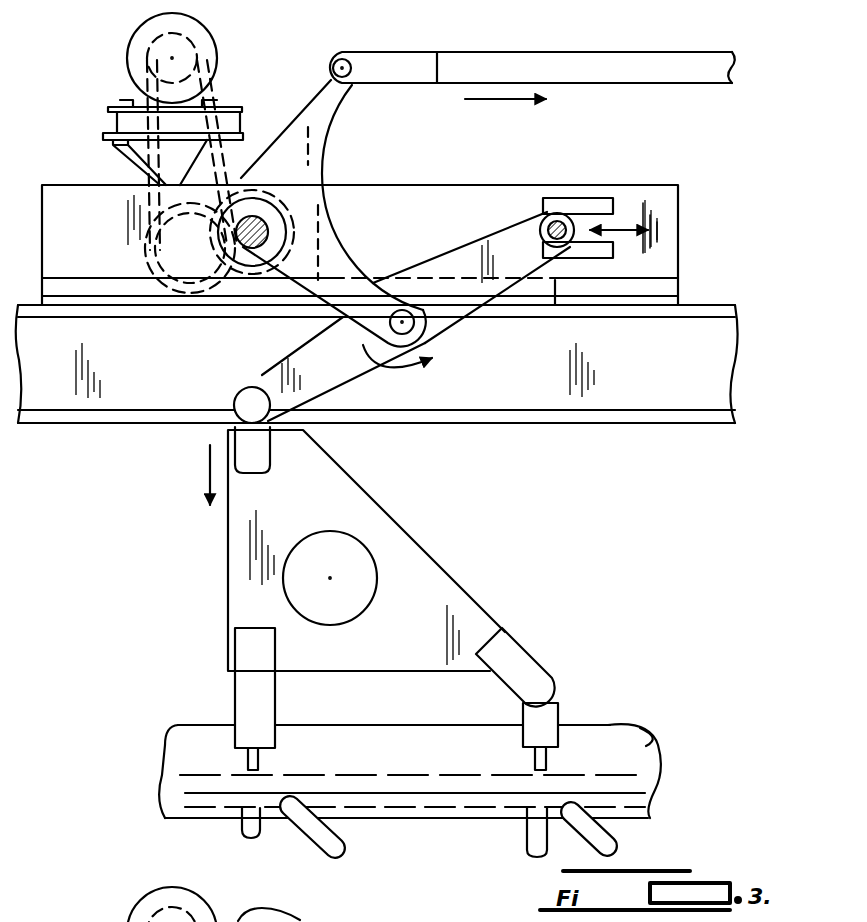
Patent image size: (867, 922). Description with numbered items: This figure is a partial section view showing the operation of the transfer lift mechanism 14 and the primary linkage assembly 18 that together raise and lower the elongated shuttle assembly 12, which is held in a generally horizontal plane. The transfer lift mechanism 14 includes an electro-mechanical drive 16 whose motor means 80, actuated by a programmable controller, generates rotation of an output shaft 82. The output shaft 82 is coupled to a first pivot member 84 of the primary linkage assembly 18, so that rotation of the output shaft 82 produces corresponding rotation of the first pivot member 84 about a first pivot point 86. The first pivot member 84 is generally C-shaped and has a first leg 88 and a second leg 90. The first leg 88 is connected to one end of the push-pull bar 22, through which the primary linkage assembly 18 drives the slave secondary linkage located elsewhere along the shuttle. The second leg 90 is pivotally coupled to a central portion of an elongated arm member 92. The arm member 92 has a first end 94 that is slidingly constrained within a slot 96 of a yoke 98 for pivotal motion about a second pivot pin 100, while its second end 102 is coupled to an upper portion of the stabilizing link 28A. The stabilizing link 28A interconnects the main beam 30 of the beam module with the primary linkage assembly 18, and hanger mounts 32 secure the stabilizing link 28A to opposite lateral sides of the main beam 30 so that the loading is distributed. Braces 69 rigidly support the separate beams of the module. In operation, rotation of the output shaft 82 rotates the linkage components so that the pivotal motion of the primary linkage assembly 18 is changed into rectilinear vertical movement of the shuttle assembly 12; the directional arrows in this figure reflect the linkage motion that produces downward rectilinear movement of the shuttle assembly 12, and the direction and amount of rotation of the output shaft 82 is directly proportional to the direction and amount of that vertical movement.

The shuttle assembly 12 is at (373, 746).
The transfer lift mechanism 14 is at (532, 462).
The electro-mechanical drive 16 is at (166, 467).
The primary linkage assembly 18 is at (490, 168).
The push-pull bar 22 is at (625, 57).
The stabilizing link 28A is at (436, 552).
The main beam 30 is at (608, 732).
The hanger mounts 32 is at (232, 694).
The braces 69 is at (530, 837).
The motor means 80 is at (130, 50).
The output shaft 82 is at (258, 231).
The first pivot member 84 is at (332, 195).
The first pivot point 86 is at (244, 246).
The first leg 88 is at (325, 107).
The second leg 90 is at (370, 287).
The arm member 92 is at (445, 340).
The first end 94 is at (523, 222).
The slot 96 is at (604, 221).
The yoke 98 is at (592, 204).
The second pivot pin 100 is at (563, 245).
The second end 102 is at (262, 376).